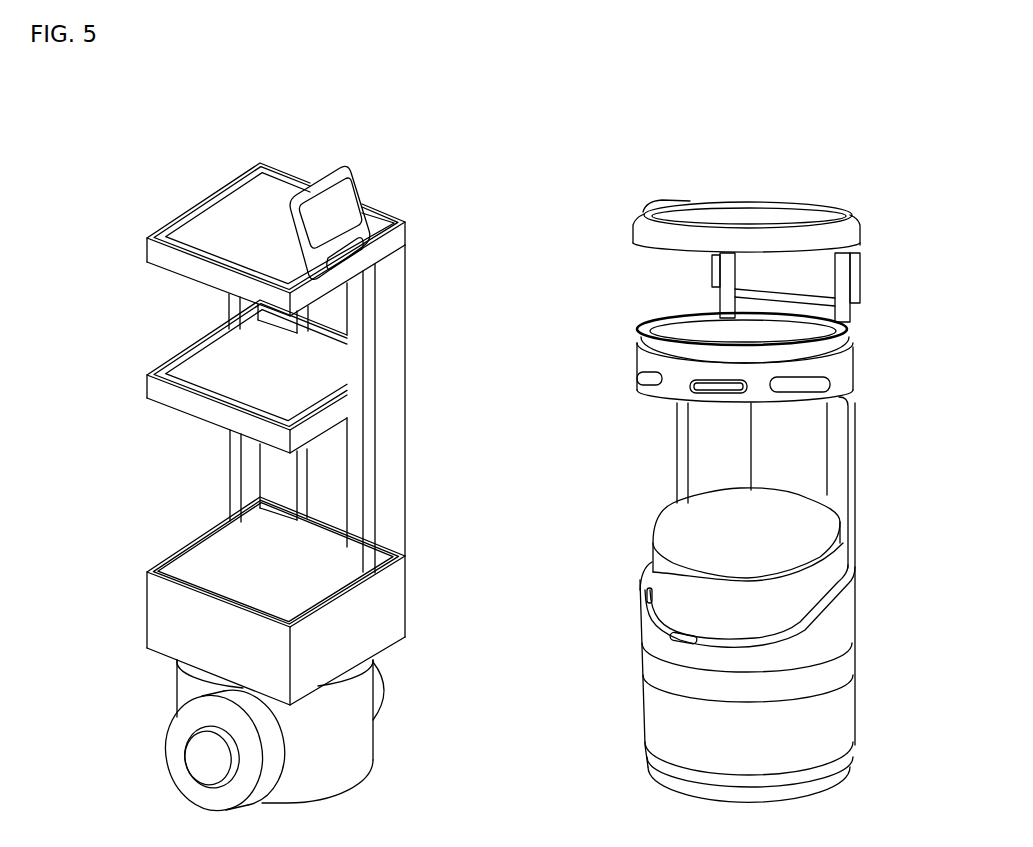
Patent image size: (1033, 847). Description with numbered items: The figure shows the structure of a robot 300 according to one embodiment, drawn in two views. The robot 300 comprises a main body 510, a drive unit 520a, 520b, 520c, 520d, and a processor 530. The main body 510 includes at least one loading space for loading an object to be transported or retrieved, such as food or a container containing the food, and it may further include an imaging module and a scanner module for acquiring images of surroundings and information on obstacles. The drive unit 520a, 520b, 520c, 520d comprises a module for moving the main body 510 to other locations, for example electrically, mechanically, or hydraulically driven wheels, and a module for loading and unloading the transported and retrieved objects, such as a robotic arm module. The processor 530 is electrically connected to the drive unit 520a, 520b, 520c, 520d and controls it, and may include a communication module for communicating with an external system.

The robot 300 is at (113, 122).
The main body 510 is at (432, 213).
The drive unit 520a is at (205, 760).
The drive unit 520b is at (163, 603).
The drive unit 520c is at (160, 390).
The drive unit 520d is at (162, 252).
The processor 530 is at (190, 677).